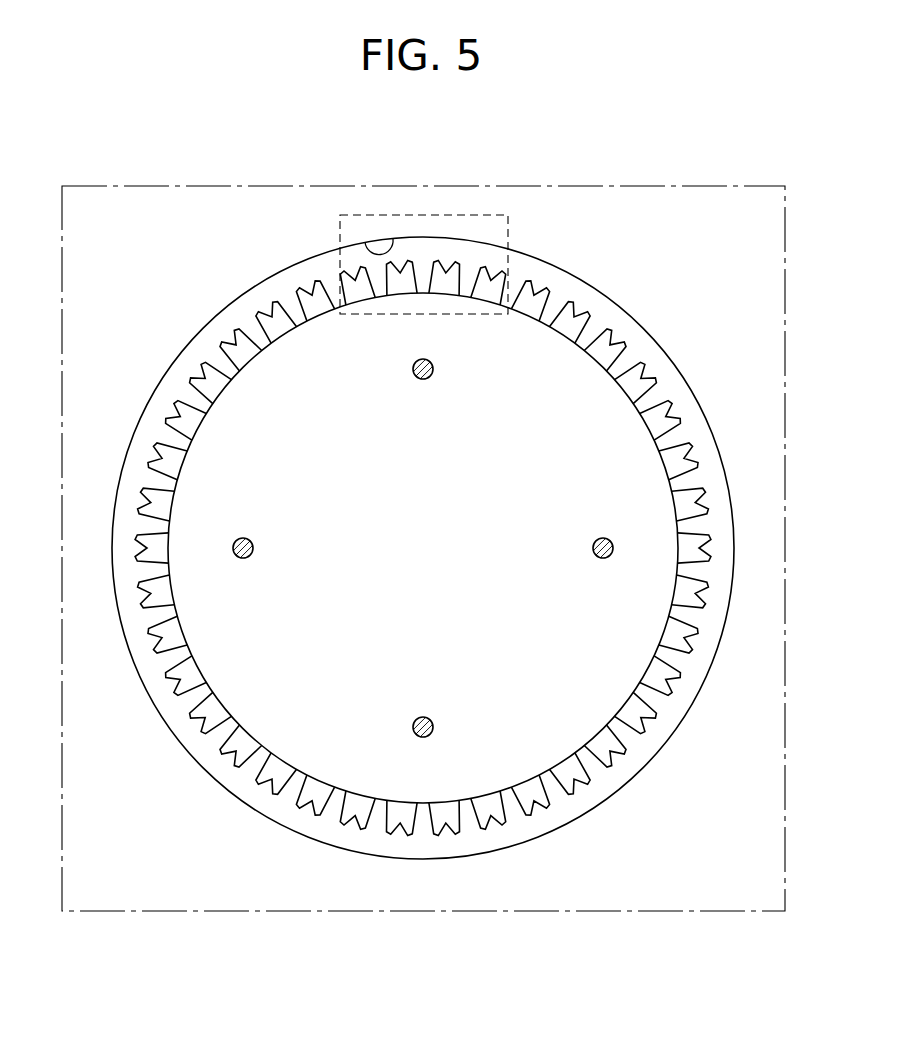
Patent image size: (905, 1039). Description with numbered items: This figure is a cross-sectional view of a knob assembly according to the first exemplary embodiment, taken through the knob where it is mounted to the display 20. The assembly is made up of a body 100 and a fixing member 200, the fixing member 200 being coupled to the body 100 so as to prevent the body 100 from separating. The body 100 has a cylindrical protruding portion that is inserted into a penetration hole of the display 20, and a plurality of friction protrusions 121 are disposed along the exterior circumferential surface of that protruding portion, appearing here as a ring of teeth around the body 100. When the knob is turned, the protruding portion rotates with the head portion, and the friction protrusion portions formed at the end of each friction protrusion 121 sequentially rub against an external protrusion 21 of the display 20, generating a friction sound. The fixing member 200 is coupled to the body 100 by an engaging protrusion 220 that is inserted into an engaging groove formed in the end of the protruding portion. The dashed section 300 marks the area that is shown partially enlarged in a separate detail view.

The display 20 is at (607, 222).
The external protrusion 21 is at (390, 250).
The body 100 is at (348, 755).
The friction protrusions 121 is at (488, 828).
The fixing member 200 is at (600, 775).
The engaging protrusion 220 is at (610, 556).
The section 300 is at (480, 208).